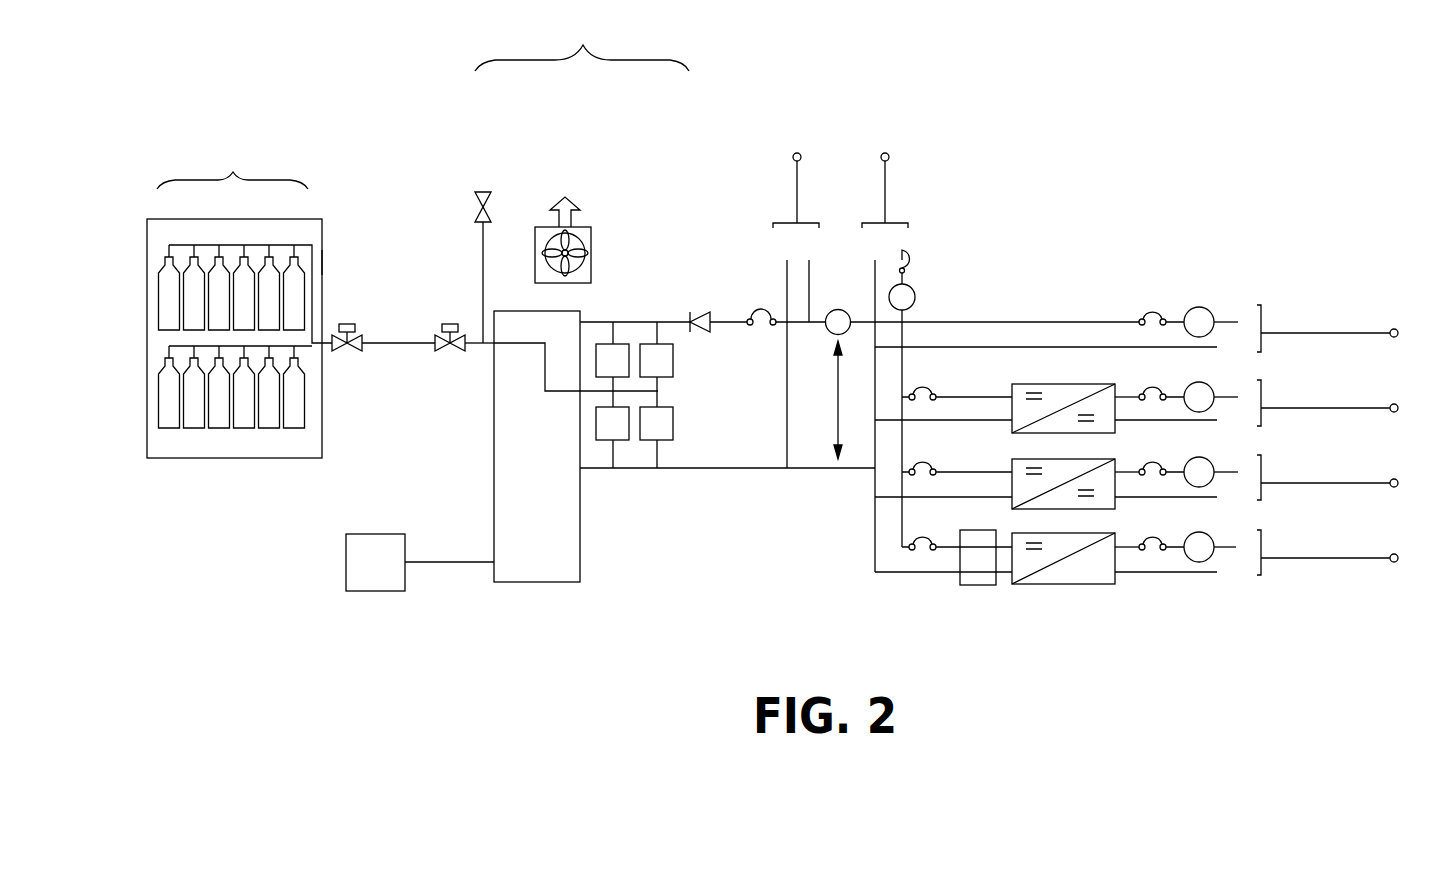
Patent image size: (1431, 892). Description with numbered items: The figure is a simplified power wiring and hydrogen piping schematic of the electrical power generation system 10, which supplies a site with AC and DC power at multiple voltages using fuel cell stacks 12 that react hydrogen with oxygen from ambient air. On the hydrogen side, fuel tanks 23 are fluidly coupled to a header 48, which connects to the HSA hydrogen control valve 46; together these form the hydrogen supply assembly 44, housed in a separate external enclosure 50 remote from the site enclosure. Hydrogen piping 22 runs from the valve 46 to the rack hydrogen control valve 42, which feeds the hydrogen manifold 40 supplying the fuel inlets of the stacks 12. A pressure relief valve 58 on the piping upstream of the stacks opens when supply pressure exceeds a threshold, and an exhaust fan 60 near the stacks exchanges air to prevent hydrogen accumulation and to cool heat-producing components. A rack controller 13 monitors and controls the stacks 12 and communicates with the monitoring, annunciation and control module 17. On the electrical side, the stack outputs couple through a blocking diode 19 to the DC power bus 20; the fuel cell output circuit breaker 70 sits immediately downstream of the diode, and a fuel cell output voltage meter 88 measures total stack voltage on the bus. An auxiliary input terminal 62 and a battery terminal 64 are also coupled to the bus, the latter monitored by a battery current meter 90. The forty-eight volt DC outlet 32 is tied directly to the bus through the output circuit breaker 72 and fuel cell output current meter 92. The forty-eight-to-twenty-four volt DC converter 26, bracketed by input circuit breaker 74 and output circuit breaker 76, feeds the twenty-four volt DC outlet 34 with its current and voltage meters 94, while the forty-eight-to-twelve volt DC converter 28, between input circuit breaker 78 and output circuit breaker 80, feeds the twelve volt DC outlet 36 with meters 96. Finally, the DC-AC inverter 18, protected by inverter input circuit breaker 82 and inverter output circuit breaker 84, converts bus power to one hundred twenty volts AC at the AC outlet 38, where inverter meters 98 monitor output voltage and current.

The electrical power generation system 10 is at (582, 41).
The fuel cell stacks 12 is at (615, 360).
The rack controller 13 is at (522, 565).
The monitoring, annunciation and control module 17 is at (370, 563).
The DC-AC inverter 18 is at (1063, 584).
The blocking diode 19 is at (692, 310).
The DC power bus 20 is at (840, 430).
The hydrogen piping 22 is at (416, 345).
The hydrogen fuel tanks 23 is at (167, 395).
The 48-24 VDC converter 26 is at (1037, 384).
The 48-12 VDC converter 28 is at (1062, 459).
The 48 VDC outlet 32 is at (1345, 333).
The 24 VDC outlet 34 is at (1345, 408).
The 12 VDC outlet 36 is at (1345, 483).
The AC outlet 38 is at (1345, 558).
The hydrogen manifold 40 is at (478, 345).
The rack hydrogen control valve 42 is at (450, 324).
The hydrogen supply assembly 44 is at (232, 163).
The HSA hydrogen control valve 46 is at (347, 324).
The header 48 is at (322, 262).
The external enclosure 50 is at (183, 458).
The pressure relief valve 58 is at (476, 207).
The exhaust fan 60 is at (591, 252).
The auxiliary input terminal 62 is at (800, 185).
The battery terminal 64 is at (888, 185).
The fuel cell output circuit breaker 70 is at (757, 312).
The 48 VDC output circuit breaker 72 is at (1152, 310).
The input circuit breaker 74 is at (930, 385).
The output circuit breaker 76 is at (1158, 385).
The input circuit breaker 78 is at (930, 460).
The output circuit breaker 80 is at (1158, 460).
The inverter input circuit breaker 82 is at (930, 535).
The inverter output circuit breaker 84 is at (1158, 535).
The fuel cell output voltage meter 88 is at (838, 309).
The battery current meter 90 is at (916, 297).
The fuel cell output current meter 92 is at (1208, 310).
The 24 VDC current and voltage meters 94 is at (1208, 385).
The 12 VDC current and voltage meters 96 is at (1208, 460).
The output voltage and current inverter meters 98 is at (1208, 535).